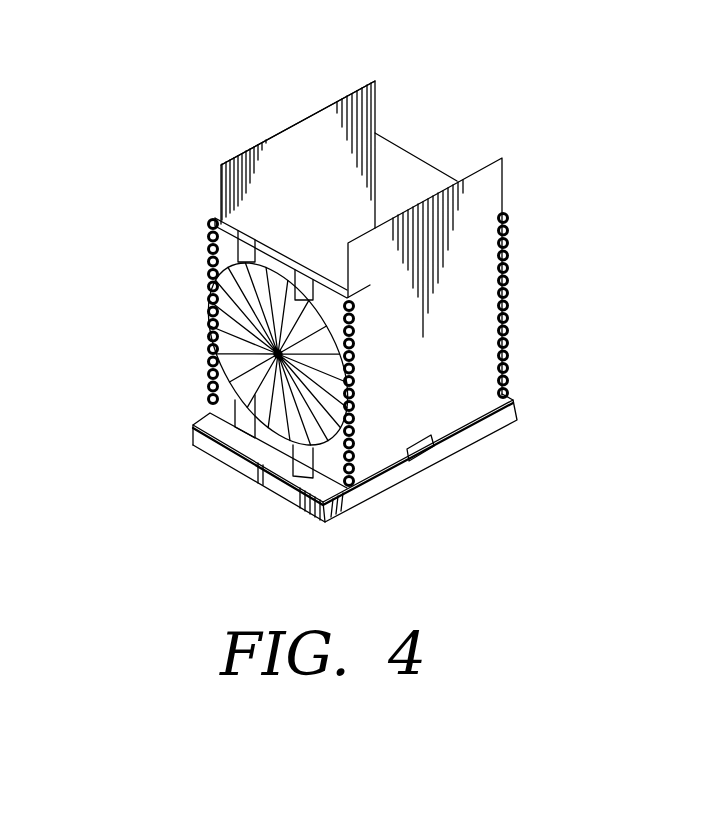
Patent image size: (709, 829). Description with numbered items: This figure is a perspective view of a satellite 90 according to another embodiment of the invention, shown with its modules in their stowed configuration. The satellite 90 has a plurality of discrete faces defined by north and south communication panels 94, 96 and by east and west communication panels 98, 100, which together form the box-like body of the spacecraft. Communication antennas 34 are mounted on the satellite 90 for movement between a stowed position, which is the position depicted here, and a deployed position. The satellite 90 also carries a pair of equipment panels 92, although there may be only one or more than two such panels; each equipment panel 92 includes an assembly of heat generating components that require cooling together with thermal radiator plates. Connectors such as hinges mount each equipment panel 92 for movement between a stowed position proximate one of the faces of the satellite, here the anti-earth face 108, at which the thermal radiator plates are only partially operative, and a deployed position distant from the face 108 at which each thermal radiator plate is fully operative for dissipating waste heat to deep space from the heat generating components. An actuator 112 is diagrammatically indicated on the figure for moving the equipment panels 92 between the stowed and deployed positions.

The satellite 90 is at (497, 135).
The equipment panel 92 is at (220, 469).
The north communication panel 94 is at (305, 138).
The south communication panel 96 is at (483, 205).
The east communication panel 98 is at (232, 247).
The west communication panel 100 is at (387, 168).
The communication antenna 34 is at (214, 336).
The anti-earth face 108 is at (349, 489).
The actuator 112 is at (436, 438).